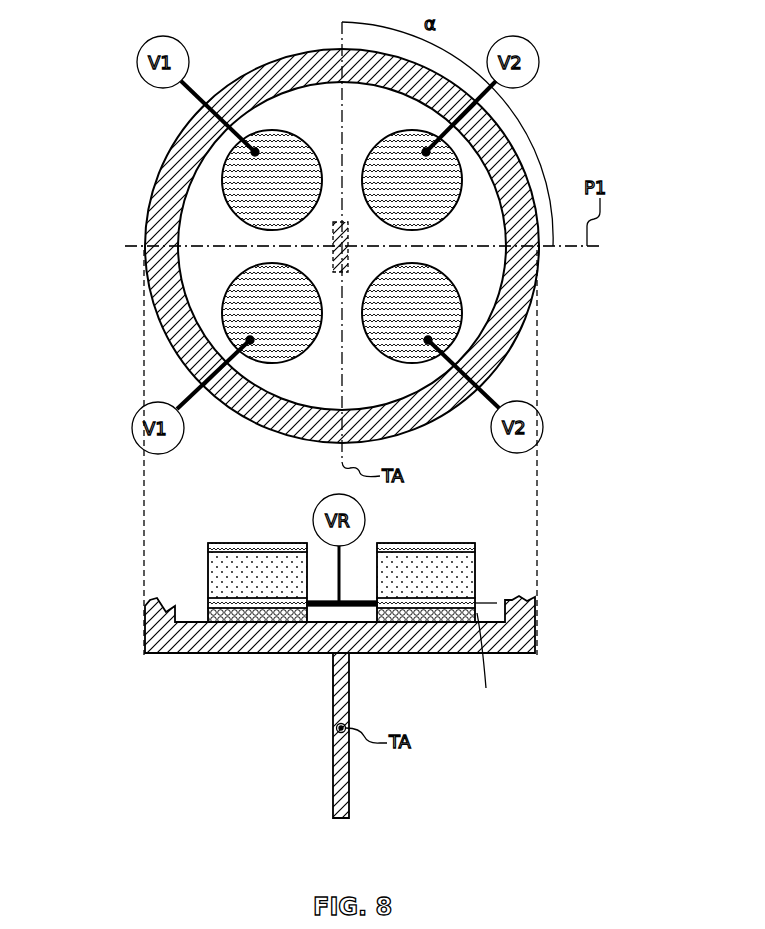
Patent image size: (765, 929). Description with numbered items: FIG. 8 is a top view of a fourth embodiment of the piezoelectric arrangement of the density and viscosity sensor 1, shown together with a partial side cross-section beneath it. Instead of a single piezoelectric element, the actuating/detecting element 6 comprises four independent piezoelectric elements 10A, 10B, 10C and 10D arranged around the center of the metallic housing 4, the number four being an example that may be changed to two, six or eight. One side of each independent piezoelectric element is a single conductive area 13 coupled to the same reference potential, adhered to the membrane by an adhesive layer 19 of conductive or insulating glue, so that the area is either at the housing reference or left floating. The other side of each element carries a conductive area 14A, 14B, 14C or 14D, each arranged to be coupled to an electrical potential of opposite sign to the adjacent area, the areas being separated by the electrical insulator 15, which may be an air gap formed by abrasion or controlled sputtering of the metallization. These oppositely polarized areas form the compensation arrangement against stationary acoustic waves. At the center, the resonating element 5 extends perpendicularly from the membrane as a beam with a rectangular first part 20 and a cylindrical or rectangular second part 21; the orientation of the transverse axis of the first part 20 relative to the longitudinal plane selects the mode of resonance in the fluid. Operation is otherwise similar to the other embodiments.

The density and viscosity sensor 1 is at (74, 98).
The metallic housing 4 is at (145, 638).
The resonating element 5 is at (352, 793).
The actuating/detecting element 6 is at (482, 568).
The piezoelectric element 10A is at (218, 170).
The piezoelectric element 10B is at (462, 157).
The piezoelectric element 10C is at (458, 345).
The piezoelectric element 10D is at (218, 332).
The single conductive area 13 is at (476, 603).
The first conductive area 14A is at (220, 543).
The second conductive area 14B is at (412, 180).
The conductive area 14C is at (457, 543).
The conductive area 14D is at (272, 313).
The electrical insulator 15 is at (480, 271).
The adhesive layer 19 is at (486, 688).
The first part of the beam 20 is at (333, 222).
The second part of the beam 21 is at (333, 677).